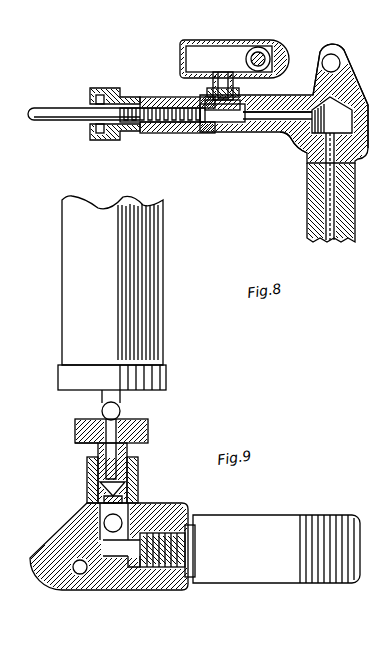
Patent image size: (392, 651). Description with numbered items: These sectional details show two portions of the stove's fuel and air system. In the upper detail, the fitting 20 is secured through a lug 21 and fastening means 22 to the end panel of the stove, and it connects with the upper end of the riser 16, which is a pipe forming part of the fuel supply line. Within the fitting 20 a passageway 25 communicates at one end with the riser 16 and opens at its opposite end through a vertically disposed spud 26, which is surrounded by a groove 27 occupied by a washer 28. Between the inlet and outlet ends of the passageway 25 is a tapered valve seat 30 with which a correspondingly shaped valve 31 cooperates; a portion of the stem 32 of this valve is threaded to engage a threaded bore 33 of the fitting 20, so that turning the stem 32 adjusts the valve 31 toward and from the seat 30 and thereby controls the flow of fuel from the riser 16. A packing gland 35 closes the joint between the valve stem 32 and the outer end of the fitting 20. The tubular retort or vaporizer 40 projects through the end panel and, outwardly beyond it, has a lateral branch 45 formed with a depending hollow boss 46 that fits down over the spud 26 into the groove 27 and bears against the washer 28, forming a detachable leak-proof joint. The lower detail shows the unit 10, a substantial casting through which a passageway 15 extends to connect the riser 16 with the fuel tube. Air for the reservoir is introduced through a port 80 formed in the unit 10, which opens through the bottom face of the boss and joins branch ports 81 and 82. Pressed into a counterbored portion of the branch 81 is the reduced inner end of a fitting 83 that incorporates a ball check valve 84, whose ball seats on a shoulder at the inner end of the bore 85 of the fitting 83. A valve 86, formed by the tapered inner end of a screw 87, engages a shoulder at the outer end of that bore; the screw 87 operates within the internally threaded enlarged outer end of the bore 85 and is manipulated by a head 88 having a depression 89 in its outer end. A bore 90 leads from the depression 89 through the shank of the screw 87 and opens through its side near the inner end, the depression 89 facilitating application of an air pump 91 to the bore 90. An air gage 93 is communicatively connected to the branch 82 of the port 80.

In FIG. 9, the unit 10 is at (66, 528).
In FIG. 9, the passageway 15 is at (80, 574).
In FIG. 8, the riser 16 is at (307, 200).
In FIG. 8, the fitting 20 is at (292, 150).
In FIG. 8, the lug 21 is at (355, 78).
In FIG. 8, the fastening means 22 is at (333, 58).
In FIG. 8, the passageway 25 is at (282, 126).
In FIG. 8, the spud 26 is at (240, 45).
In FIG. 8, the groove 27 is at (246, 108).
In FIG. 8, the washer 28 is at (208, 104).
In FIG. 8, the valve seat 30 is at (238, 124).
In FIG. 8, the valve 31 is at (198, 128).
In FIG. 8, the stem 32 is at (52, 108).
In FIG. 8, the threaded bore 33 is at (146, 130).
In FIG. 8, the packing gland 35 is at (104, 88).
In FIG. 8, the retort or vaporizer 40 is at (268, 55).
In FIG. 8, the lateral branch 45 is at (215, 45).
In FIG. 8, the depending hollow boss 46 is at (209, 92).
In FIG. 9, the port 80 is at (130, 568).
In FIG. 9, the branch port 81 is at (104, 544).
In FIG. 9, the branch port 82 is at (150, 568).
In FIG. 9, the fitting 83 is at (139, 466).
In FIG. 9, the ball check valve 84 is at (104, 520).
In FIG. 9, the bore 85 is at (130, 500).
In FIG. 9, the valve 86 is at (126, 489).
In FIG. 9, the screw 87 is at (128, 452).
In FIG. 9, the head 88 is at (76, 426).
In FIG. 9, the depression 89 is at (128, 424).
In FIG. 9, the bore 90 is at (82, 447).
In FIG. 9, the air pump 91 is at (112, 293).
In FIG. 9, the air gage 93 is at (272, 549).